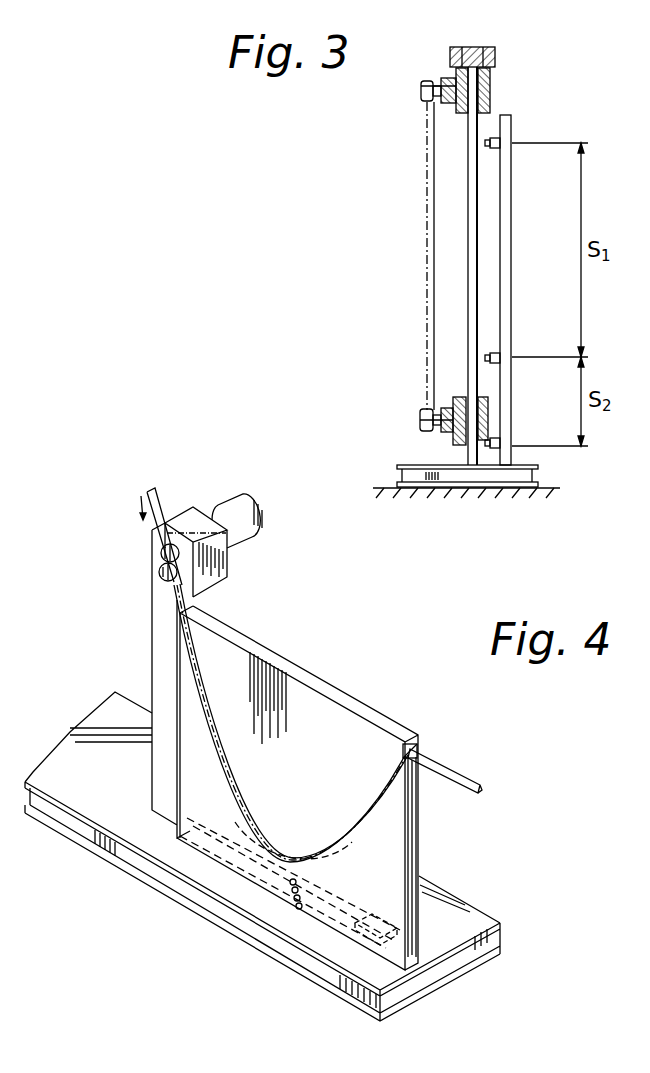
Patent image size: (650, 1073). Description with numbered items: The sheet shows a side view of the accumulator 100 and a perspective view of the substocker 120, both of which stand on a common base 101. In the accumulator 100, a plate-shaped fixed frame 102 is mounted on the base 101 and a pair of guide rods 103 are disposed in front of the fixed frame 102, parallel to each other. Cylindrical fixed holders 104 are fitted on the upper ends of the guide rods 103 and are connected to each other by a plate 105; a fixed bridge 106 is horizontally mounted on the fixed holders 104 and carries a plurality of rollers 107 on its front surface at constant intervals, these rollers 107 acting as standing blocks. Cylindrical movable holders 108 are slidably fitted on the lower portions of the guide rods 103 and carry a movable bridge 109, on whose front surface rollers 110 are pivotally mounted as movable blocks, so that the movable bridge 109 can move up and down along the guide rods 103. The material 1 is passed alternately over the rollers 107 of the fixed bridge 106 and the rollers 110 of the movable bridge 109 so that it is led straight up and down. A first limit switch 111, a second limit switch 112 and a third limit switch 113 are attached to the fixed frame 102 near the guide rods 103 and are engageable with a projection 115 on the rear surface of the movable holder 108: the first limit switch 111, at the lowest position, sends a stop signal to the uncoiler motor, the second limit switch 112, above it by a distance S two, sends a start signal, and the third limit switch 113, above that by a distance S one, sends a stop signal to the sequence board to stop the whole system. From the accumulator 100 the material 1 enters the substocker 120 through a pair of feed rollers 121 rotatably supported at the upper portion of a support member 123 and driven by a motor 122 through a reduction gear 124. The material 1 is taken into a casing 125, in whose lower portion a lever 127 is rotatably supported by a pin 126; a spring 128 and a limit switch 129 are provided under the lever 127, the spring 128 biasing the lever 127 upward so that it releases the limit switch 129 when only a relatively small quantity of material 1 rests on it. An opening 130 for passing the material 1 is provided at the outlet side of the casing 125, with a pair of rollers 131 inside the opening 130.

In FIG. 3, the material 1 is at (424, 228).
In FIG. 4, the material 1 is at (197, 667).
In FIG. 3, the accumulator 100 is at (536, 128).
In FIG. 3, the base 101 is at (486, 477).
In FIG. 4, the base 101 is at (468, 906).
In FIG. 3, the fixed frame 102 is at (512, 204).
In FIG. 3, the guide rods 103 is at (478, 131).
In FIG. 3, the cylindrical fixed holders 104 is at (490, 82).
In FIG. 3, the plate 105 is at (487, 46).
In FIG. 3, the fixed bridge 106 is at (428, 102).
In FIG. 3, the rollers 107 is at (426, 80).
In FIG. 3, the cylindrical movable holders 108 is at (455, 398).
In FIG. 3, the movable bridge 109 is at (440, 432).
In FIG. 3, the rollers 110 is at (424, 414).
In FIG. 3, the first limit switch 111 is at (500, 442).
In FIG. 3, the second limit switch 112 is at (509, 357).
In FIG. 3, the third limit switch 113 is at (509, 145).
In FIG. 3, the projection 115 is at (526, 484).
In FIG. 4, the substocker 120 is at (310, 668).
In FIG. 4, the feed rollers 121 is at (159, 570).
In FIG. 4, the motor 122 is at (263, 516).
In FIG. 4, the support member 123 is at (220, 594).
In FIG. 4, the reduction gear 124 is at (190, 514).
In FIG. 4, the casing 125 is at (386, 718).
In FIG. 4, the pin 126 is at (205, 815).
In FIG. 4, the lever 127 is at (205, 915).
In FIG. 4, the spring 128 is at (286, 905).
In FIG. 4, the limit switch 129 is at (306, 975).
In FIG. 4, the opening 130 is at (420, 752).
In FIG. 4, the rollers 131 is at (422, 742).